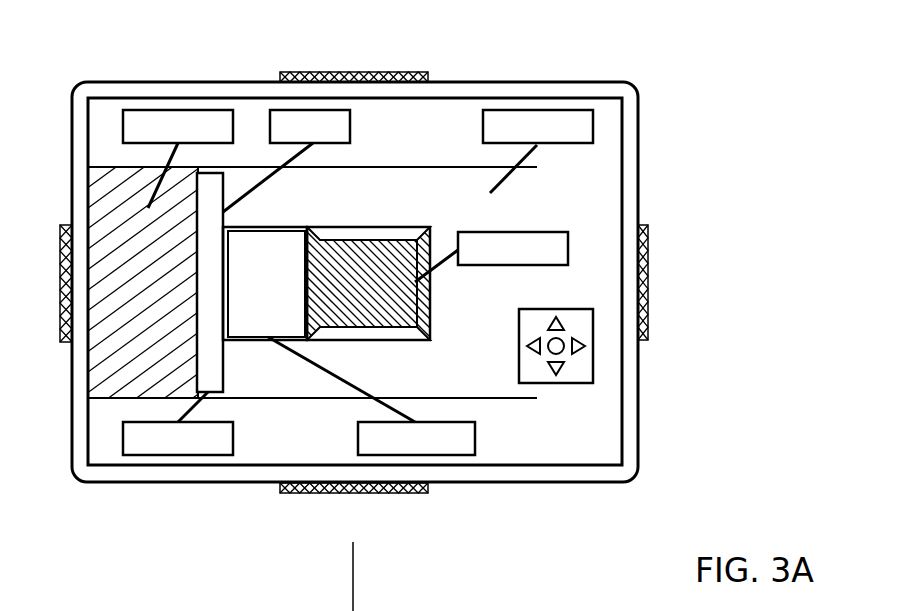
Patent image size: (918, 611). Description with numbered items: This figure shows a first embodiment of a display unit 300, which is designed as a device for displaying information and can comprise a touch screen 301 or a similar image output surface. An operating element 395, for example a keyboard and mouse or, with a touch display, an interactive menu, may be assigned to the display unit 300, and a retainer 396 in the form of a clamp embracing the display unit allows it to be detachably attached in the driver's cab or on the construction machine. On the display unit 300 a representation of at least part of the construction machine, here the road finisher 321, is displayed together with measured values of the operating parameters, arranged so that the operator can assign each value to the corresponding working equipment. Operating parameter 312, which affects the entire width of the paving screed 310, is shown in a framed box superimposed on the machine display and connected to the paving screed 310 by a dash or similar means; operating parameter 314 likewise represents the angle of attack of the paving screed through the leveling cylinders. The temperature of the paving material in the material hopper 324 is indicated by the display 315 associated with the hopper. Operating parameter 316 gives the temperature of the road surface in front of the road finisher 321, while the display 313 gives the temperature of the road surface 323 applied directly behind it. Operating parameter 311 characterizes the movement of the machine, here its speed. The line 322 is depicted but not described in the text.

The display unit 300 is at (396, 57).
The touch screen 301 is at (580, 450).
The paving screed 310 is at (223, 213).
The operating parameter 311 is at (453, 455).
The operating parameter 312 is at (217, 455).
The display 313 is at (183, 110).
The operating parameter 314 is at (273, 110).
The display 315 is at (561, 232).
The operating parameter 316 is at (568, 110).
The road finisher 321 is at (387, 223).
The lower guide line 322 is at (508, 387).
The road surface 323 is at (112, 396).
The material hopper 324 is at (428, 315).
The operating element 395 is at (593, 373).
The retainer 396 is at (428, 71).